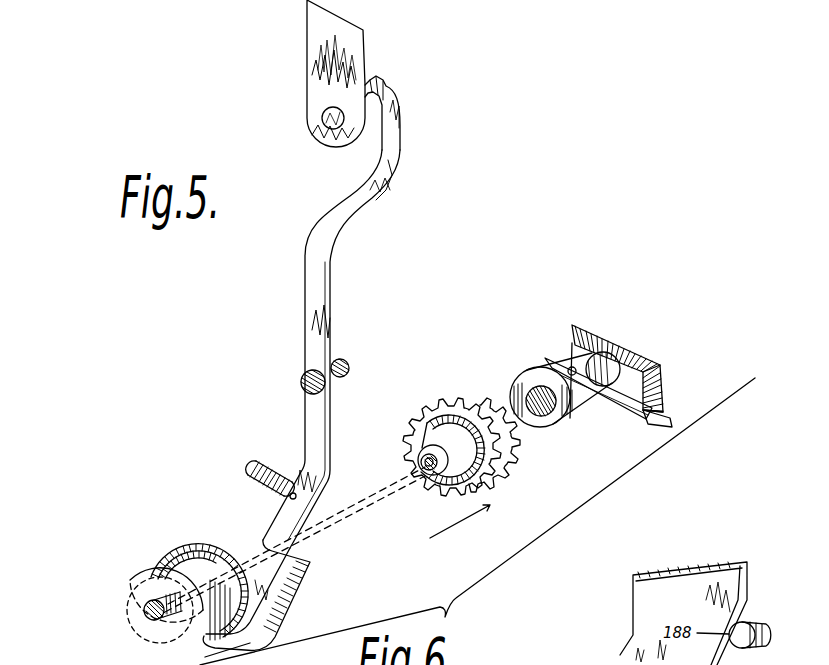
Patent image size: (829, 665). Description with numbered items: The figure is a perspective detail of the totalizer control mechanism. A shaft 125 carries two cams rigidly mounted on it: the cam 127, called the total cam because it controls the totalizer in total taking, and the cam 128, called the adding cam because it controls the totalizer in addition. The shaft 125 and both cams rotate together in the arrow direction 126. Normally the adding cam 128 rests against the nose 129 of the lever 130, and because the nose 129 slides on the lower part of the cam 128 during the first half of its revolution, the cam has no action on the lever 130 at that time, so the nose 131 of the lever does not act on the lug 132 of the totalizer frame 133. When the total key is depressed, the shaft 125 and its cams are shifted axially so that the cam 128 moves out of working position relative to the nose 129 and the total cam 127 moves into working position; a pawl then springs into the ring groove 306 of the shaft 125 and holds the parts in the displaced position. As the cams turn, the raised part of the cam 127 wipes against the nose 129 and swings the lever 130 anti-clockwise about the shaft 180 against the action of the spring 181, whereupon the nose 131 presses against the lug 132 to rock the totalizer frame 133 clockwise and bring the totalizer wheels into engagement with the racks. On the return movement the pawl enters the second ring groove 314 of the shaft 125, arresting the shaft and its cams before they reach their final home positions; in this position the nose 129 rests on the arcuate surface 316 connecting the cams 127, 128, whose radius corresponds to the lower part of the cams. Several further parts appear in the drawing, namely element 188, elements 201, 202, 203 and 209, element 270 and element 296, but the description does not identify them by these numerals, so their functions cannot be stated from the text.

The shaft 125 is at (144, 617).
The arrow direction 126 is at (508, 458).
The cam 127 is at (125, 600).
The cam 128 is at (500, 478).
The nose 129 is at (222, 646).
The lever 130 is at (311, 357).
The nose 131 is at (385, 97).
The lug 132 is at (360, 97).
The totalizer frame 133 is at (318, 37).
The shaft 180 is at (300, 383).
The spring 181 is at (248, 473).
The drum surface 188 is at (163, 552).
The roller 201 is at (546, 362).
The link arm 202 is at (555, 359).
The frame bracket 203 is at (645, 356).
The base foot 209 is at (587, 424).
The frame side 270 is at (660, 396).
The direction arrow 296 is at (466, 521).
The ring groove 306 is at (421, 474).
The ring groove 314 is at (437, 492).
The arcuate surface 316 is at (160, 565).